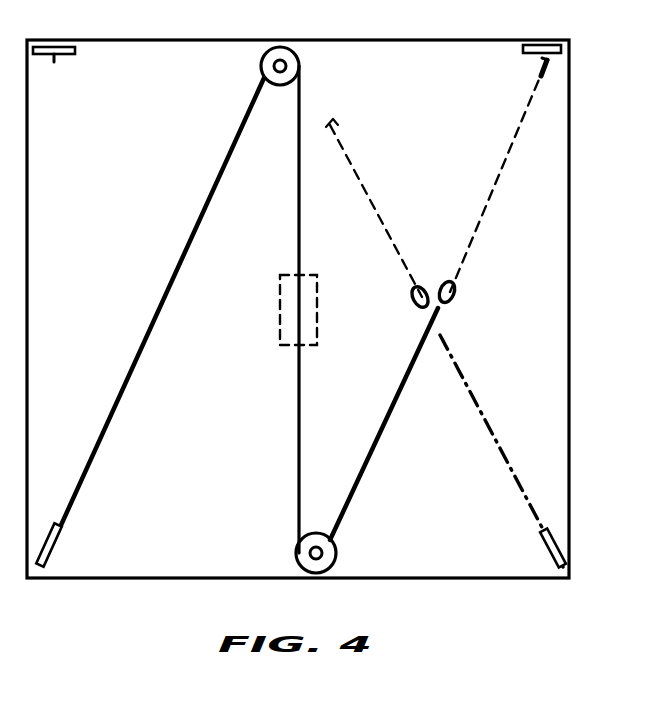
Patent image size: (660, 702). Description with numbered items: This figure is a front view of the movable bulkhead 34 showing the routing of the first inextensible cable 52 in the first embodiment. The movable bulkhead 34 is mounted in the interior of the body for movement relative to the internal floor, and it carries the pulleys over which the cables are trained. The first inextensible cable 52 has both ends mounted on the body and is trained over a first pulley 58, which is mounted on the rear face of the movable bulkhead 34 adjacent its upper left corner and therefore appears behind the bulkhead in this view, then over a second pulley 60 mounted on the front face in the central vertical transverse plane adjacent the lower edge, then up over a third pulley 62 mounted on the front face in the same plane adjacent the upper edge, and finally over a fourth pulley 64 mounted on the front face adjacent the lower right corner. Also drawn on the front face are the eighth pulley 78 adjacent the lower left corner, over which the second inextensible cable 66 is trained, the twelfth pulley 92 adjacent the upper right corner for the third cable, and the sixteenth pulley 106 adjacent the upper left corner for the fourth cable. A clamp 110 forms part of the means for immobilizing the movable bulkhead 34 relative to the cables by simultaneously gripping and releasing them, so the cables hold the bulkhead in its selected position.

The movable bulkhead 34 is at (569, 183).
The first inextensible cable 52 is at (152, 328).
The first pulley 58 is at (552, 77).
The second pulley 60 is at (296, 553).
The third pulley 62 is at (262, 64).
The fourth pulley 64 is at (62, 542).
The second inextensible cable 66 is at (480, 405).
The eighth pulley 78 is at (543, 548).
The twelfth pulley 92 is at (54, 62).
The sixteenth pulley 106 is at (526, 53).
The clamp 110 is at (282, 347).